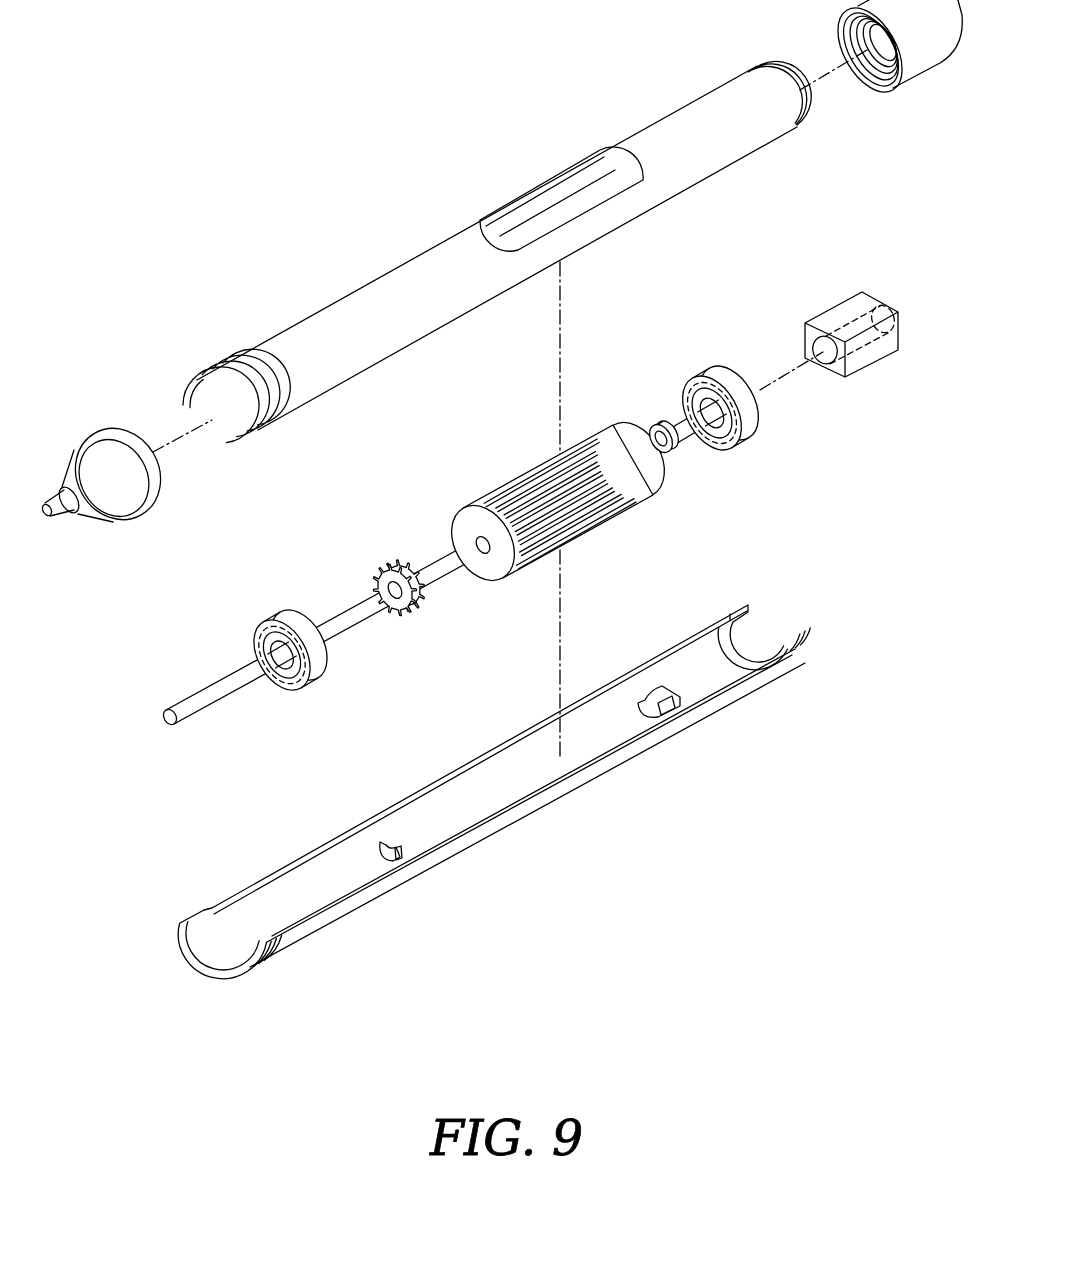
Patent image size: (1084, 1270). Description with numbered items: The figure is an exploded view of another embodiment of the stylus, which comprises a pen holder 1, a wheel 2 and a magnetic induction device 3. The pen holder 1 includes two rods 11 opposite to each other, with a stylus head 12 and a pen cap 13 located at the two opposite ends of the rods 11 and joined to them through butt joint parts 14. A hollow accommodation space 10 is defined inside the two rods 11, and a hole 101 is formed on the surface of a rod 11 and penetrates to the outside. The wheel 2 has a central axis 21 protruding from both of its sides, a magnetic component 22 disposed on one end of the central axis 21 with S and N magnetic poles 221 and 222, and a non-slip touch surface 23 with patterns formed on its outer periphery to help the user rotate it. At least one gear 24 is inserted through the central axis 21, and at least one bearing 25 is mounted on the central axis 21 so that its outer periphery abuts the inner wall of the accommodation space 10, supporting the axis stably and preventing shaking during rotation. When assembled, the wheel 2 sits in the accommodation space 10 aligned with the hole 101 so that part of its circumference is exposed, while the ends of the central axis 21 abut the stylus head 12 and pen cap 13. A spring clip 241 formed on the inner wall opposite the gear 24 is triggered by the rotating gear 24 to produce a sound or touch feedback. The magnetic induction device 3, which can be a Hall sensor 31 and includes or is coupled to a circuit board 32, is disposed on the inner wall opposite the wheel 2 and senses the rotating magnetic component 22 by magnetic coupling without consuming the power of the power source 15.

The pen holder 1 is at (497, 442).
The wheel 2 is at (538, 504).
The magnetic induction device 3 is at (491, 792).
The accommodation space 10 is at (491, 792).
The rods 11 is at (468, 300).
The stylus head 12 is at (107, 500).
The pen cap 13 is at (913, 63).
The butt joint parts 14 is at (235, 437).
The power source 15 is at (867, 353).
The central axis 21 is at (514, 594).
The magnetic component 22 is at (717, 469).
The touch surface 23 is at (603, 505).
The gear 24 is at (423, 607).
The bearing 25 is at (318, 672).
The Hall sensor 31 is at (660, 700).
The circuit board 32 is at (690, 688).
The hole 101 is at (592, 203).
The S magnetic pole 221 is at (713, 418).
The N magnetic pole 222 is at (677, 457).
The spring clip 241 is at (410, 853).